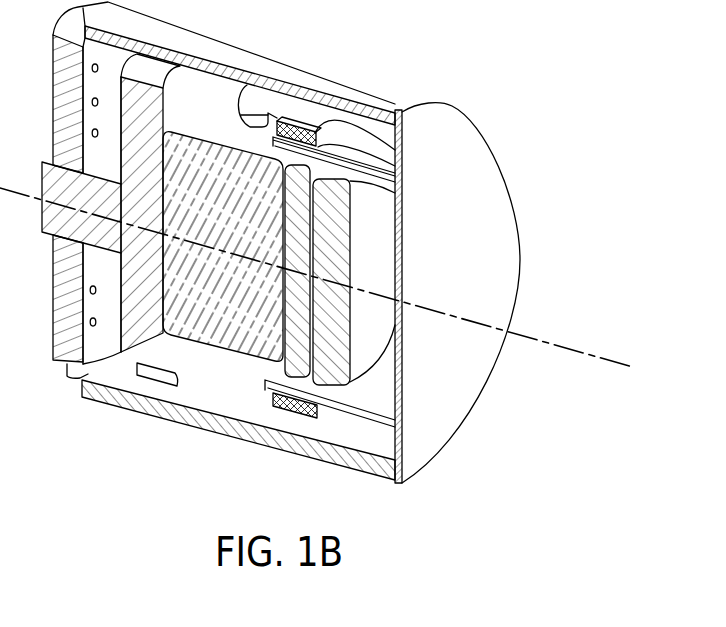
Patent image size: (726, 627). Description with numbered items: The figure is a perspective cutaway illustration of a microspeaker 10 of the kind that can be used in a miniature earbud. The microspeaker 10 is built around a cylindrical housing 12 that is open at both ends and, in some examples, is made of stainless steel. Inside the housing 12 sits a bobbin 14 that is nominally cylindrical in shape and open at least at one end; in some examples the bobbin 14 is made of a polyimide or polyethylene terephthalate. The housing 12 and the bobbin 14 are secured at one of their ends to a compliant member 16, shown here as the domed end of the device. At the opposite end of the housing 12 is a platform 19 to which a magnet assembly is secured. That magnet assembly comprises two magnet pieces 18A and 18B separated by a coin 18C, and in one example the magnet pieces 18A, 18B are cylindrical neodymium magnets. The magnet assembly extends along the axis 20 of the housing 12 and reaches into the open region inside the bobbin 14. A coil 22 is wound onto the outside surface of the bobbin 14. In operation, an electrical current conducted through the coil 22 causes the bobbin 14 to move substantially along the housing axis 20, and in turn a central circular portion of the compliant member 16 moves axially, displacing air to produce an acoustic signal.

The microspeaker 10 is at (316, 259).
The cylindrical housing 12 is at (282, 59).
The bobbin 14 is at (377, 403).
The compliant member 16 is at (520, 230).
The magnet piece 18A is at (235, 327).
The magnet piece 18B is at (340, 362).
The coin 18C is at (300, 360).
The platform 19 is at (136, 353).
The axis 20 is at (568, 346).
The coil 22 is at (318, 121).